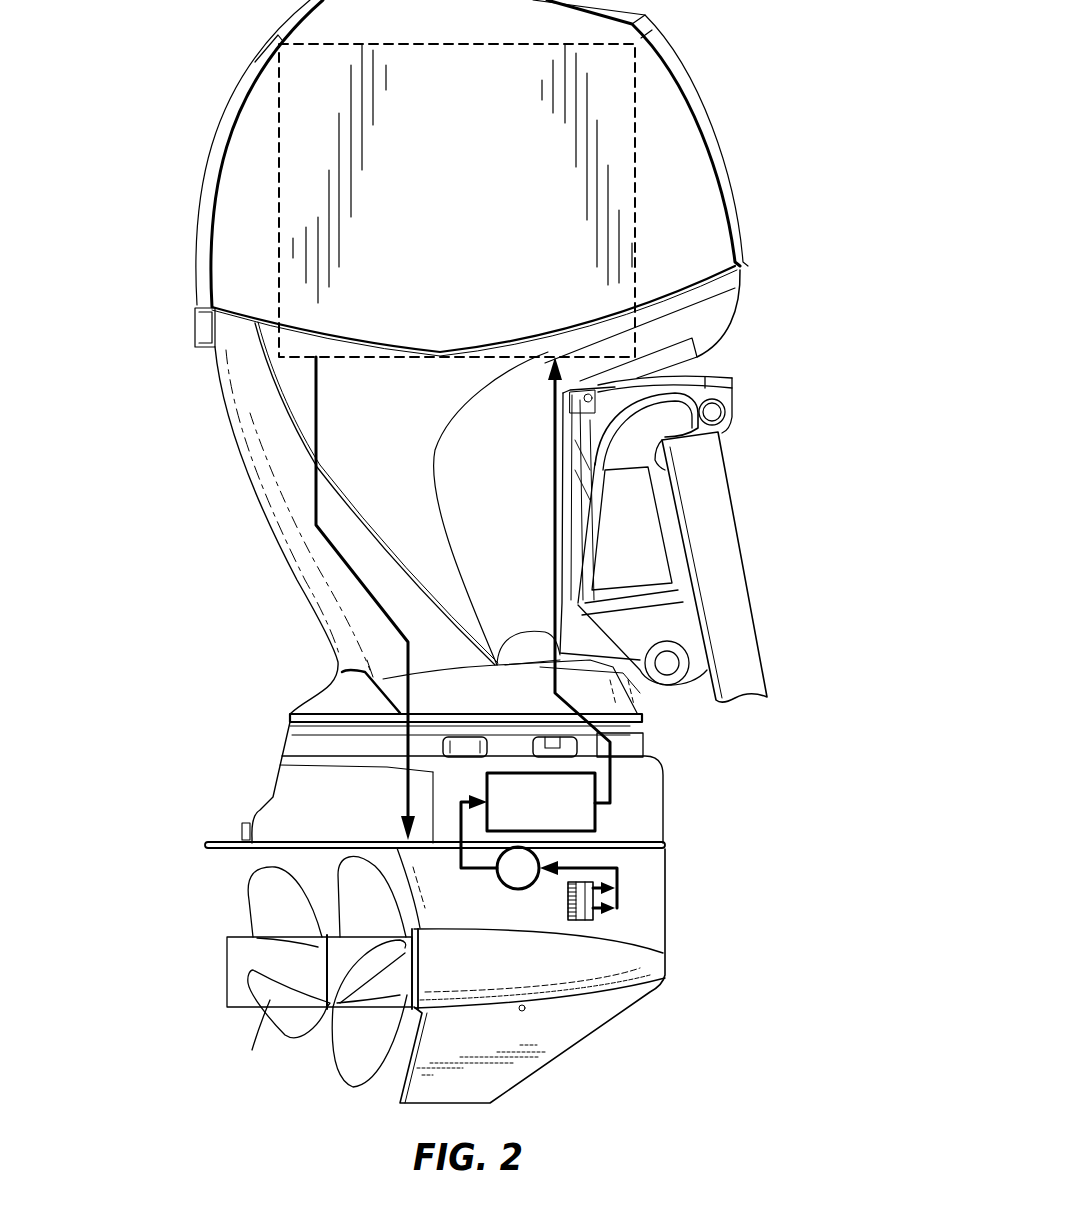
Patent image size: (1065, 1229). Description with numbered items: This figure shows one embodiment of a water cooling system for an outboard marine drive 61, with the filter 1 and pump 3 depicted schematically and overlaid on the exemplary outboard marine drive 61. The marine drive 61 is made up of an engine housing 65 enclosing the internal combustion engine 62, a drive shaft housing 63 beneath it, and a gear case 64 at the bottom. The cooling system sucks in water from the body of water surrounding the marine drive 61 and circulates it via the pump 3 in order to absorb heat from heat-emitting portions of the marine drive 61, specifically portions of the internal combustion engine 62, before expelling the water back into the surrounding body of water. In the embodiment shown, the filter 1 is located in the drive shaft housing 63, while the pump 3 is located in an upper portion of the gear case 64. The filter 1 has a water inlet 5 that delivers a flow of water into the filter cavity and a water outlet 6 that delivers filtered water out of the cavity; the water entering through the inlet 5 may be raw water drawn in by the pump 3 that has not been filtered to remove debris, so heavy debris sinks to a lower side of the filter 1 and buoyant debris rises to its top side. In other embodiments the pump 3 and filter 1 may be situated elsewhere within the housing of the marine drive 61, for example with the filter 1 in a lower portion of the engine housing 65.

The filter 1 is at (575, 808).
The pump 3 is at (510, 876).
The water inlet 5 is at (485, 799).
The water outlet 6 is at (600, 808).
The marine drive 61 is at (778, 153).
The internal combustion engine 62 is at (645, 95).
The drive shaft housing 63 is at (652, 780).
The gear case 64 is at (645, 898).
The engine housing 65 is at (298, 585).